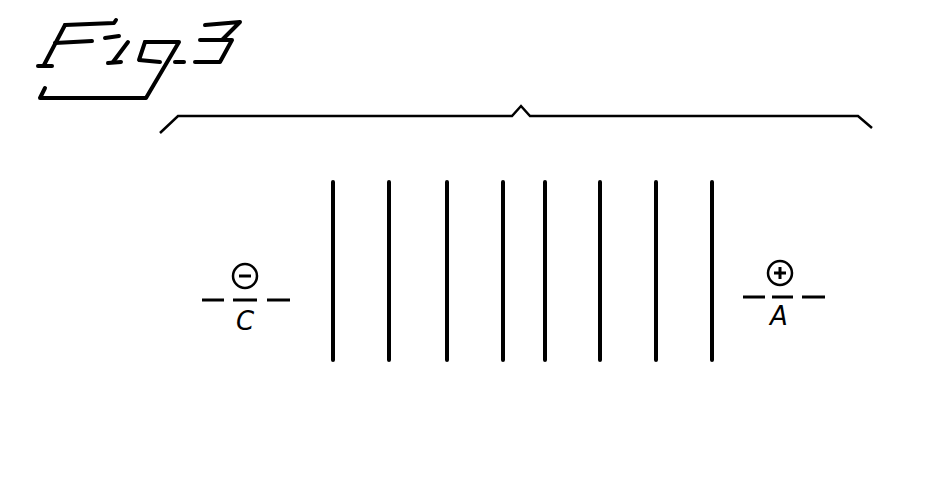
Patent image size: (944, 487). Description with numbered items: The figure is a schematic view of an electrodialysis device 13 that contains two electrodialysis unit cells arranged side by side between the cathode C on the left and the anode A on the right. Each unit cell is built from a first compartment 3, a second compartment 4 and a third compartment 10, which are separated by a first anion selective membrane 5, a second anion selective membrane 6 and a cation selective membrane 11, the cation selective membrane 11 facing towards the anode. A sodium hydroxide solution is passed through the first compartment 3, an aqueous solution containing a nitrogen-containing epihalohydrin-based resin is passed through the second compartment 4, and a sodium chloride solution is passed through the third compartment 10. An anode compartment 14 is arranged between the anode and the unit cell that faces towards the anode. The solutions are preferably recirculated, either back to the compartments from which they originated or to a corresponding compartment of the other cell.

The electrodialysis device 13 is at (516, 104).
The first anion selective membrane 5 is at (465, 254).
The second anion selective membrane 6 is at (521, 254).
The cation selective membrane 11 is at (582, 254).
The first compartment 3 is at (368, 243).
The second compartment 4 is at (426, 243).
The third compartment 10 is at (486, 243).
The anode compartment 14 is at (694, 243).